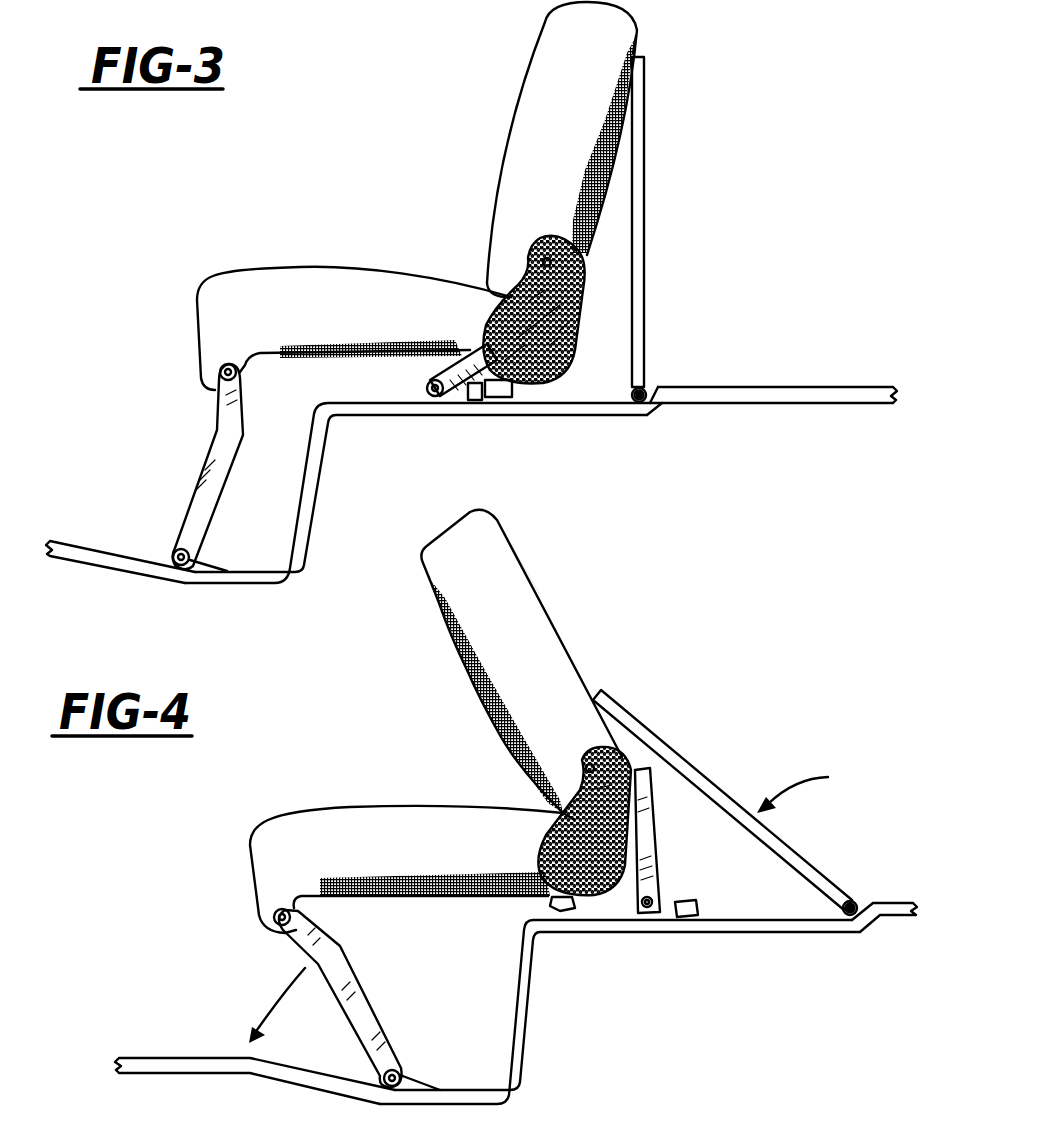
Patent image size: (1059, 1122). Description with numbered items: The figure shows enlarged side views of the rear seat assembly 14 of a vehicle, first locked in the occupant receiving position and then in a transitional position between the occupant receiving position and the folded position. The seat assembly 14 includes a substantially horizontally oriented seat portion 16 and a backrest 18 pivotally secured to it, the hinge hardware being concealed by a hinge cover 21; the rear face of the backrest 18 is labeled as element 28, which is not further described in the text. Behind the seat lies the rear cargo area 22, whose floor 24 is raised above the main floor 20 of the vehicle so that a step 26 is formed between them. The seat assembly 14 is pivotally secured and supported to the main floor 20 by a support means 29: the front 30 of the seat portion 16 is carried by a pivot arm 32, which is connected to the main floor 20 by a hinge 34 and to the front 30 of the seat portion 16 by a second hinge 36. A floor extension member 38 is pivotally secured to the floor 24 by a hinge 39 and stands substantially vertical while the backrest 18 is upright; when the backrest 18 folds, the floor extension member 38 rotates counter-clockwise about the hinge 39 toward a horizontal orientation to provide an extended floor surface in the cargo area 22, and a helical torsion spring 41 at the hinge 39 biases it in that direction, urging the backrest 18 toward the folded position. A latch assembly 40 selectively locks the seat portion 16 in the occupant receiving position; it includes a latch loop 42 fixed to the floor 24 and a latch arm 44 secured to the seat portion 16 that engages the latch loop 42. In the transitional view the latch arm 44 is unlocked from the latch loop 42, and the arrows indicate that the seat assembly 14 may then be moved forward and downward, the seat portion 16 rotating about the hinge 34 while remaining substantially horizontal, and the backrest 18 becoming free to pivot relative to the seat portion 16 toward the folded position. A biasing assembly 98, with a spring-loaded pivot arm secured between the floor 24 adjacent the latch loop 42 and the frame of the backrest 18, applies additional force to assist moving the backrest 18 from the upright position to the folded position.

In FIG. 3, the rear seat assembly 14 is at (648, 32).
In FIG. 4, the rear seat assembly 14 is at (542, 585).
In FIG. 3, the seat portion 16 is at (290, 270).
In FIG. 4, the seat portion 16 is at (346, 807).
In FIG. 3, the backrest 18 is at (507, 138).
In FIG. 4, the backrest 18 is at (453, 637).
In FIG. 3, the main floor 20 is at (100, 553).
In FIG. 4, the main floor 20 is at (169, 1055).
In FIG. 3, the hinge cover 21 is at (575, 273).
In FIG. 4, the hinge cover 21 is at (545, 846).
In FIG. 3, the rear cargo area 22 is at (813, 220).
In FIG. 4, the rear cargo area 22 is at (809, 735).
In FIG. 3, the floor 24 is at (747, 388).
In FIG. 4, the floor 24 is at (743, 918).
In FIG. 3, the step 26 is at (308, 460).
In FIG. 4, the step 26 is at (521, 962).
In FIG. 3, the seat back rear surface 28 is at (600, 205).
In FIG. 4, the seat back rear surface 28 is at (568, 657).
In FIG. 3, the support means 29 is at (205, 431).
In FIG. 4, the support means 29 is at (339, 1036).
In FIG. 3, the front of the seat portion 30 is at (203, 347).
In FIG. 4, the front of the seat portion 30 is at (260, 887).
In FIG. 3, the pivot arm 32 is at (213, 480).
In FIG. 4, the pivot arm 32 is at (356, 994).
In FIG. 3, the hinge 34 is at (208, 572).
In FIG. 4, the hinge 34 is at (404, 1068).
In FIG. 3, the second hinge 36 is at (241, 373).
In FIG. 4, the second hinge 36 is at (301, 906).
In FIG. 3, the floor extension member 38 is at (640, 130).
In FIG. 4, the floor extension member 38 is at (657, 741).
In FIG. 3, the hinge 39 is at (647, 403).
In FIG. 4, the hinge 39 is at (853, 933).
In FIG. 3, the latch assembly 40 is at (508, 424).
In FIG. 3, the helical torsion spring 41 is at (633, 392).
In FIG. 4, the helical torsion spring 41 is at (851, 903).
In FIG. 3, the latch loop 42 is at (472, 400).
In FIG. 4, the latch loop 42 is at (700, 912).
In FIG. 3, the latch arm 44 is at (533, 395).
In FIG. 4, the latch arm 44 is at (556, 905).
In FIG. 3, the biasing assembly 98 is at (468, 356).
In FIG. 4, the biasing assembly 98 is at (652, 862).